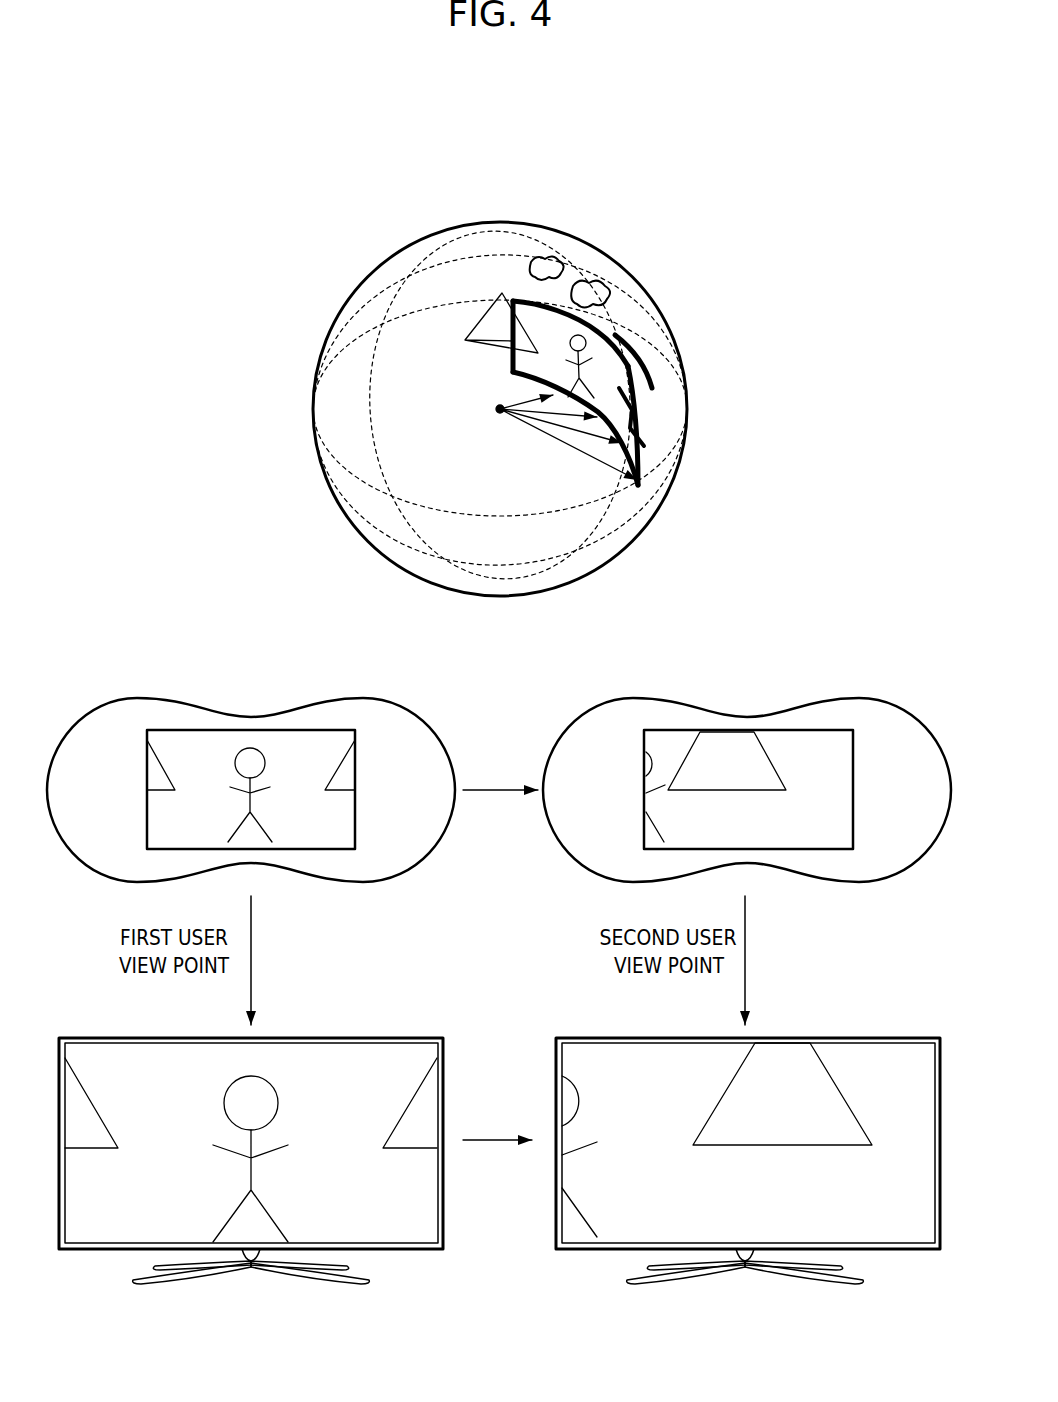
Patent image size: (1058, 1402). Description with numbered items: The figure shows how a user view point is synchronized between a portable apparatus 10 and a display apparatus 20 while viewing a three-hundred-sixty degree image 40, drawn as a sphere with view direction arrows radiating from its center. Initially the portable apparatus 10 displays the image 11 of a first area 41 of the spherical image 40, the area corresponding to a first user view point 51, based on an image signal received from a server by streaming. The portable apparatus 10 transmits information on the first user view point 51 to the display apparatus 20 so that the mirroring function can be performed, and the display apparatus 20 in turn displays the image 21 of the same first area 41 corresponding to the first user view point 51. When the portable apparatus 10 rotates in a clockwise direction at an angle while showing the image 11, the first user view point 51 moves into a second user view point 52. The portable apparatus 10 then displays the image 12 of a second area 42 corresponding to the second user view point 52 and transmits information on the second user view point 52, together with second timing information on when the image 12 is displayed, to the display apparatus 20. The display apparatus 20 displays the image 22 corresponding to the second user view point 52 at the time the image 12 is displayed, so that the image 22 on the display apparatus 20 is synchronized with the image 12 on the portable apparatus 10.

The portable apparatus 10 is at (130, 698).
The image of first area 11 is at (316, 753).
The image of second area 12 is at (814, 753).
The display apparatus 20 is at (309, 1036).
The image of first area on display apparatus 21 is at (396, 1052).
The image of second area on display apparatus 22 is at (890, 1050).
The 360 degree image 40 is at (497, 222).
The first area 41 is at (553, 306).
The second area 42 is at (643, 445).
The first user view point 51 is at (532, 397).
The second user view point 52 is at (555, 442).